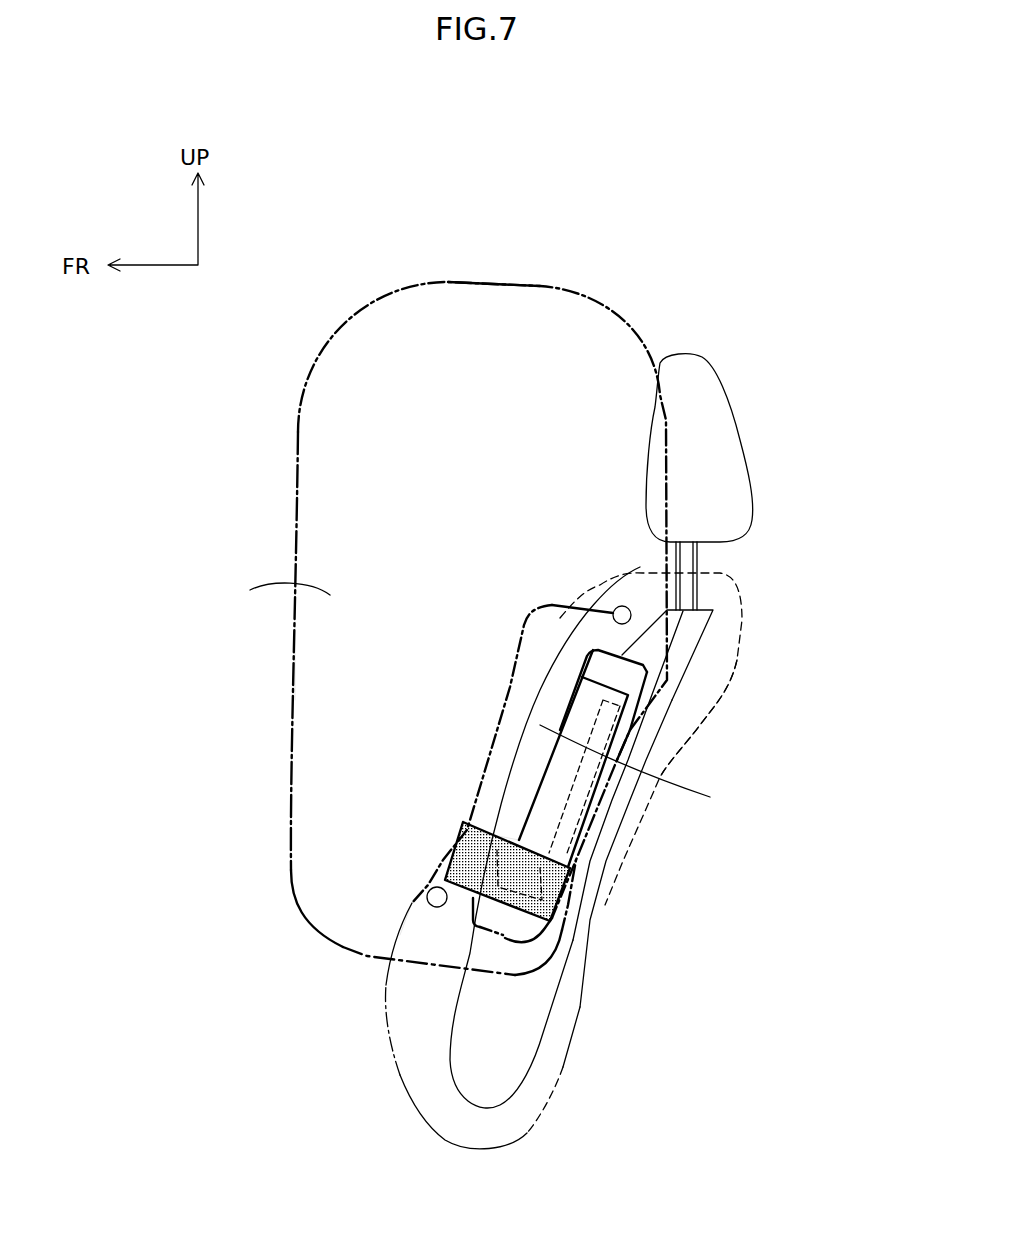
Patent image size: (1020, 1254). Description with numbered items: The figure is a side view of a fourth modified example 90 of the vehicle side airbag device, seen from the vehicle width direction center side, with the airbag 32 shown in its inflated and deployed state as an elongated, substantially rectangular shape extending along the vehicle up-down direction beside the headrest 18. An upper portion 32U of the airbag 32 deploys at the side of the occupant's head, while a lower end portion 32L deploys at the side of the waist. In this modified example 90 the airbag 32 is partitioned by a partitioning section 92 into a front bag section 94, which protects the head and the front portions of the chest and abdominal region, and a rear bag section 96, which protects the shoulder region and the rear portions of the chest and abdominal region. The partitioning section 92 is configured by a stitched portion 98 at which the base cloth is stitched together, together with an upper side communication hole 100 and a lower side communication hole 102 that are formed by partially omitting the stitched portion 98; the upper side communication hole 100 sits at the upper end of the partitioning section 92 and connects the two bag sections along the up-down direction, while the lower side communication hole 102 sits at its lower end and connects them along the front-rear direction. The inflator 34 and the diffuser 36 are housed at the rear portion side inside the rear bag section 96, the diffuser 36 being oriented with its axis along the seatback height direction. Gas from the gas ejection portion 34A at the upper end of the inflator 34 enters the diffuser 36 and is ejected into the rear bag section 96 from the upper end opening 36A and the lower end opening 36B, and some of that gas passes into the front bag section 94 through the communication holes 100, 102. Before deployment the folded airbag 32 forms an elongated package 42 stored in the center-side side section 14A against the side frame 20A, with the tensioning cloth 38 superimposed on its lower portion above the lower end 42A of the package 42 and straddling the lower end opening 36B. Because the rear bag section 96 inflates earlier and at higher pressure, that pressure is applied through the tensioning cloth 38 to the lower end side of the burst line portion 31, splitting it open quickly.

The center-side side support section 14A is at (612, 880).
The headrest 18 is at (683, 353).
The side frame 20A is at (550, 1032).
The burst line portion 31 is at (493, 757).
The airbag 32 is at (292, 507).
The upper portion of the airbag 32U is at (483, 375).
The lower end portion of the airbag 32L is at (337, 920).
The inflator 34 is at (603, 807).
The gas ejection portion 34A is at (690, 732).
The diffuser 36 is at (545, 763).
The upper end opening 36A is at (615, 680).
The lower end opening 36B is at (555, 950).
The tensioning cloth 38 is at (457, 893).
The package 42 is at (511, 810).
The lower end of the package 42A is at (557, 995).
The fourth modified example 90 is at (232, 688).
The partitioning section 92 is at (520, 622).
The front bag section 94 is at (250, 590).
The rear bag section 96 is at (710, 797).
The stitched portion 98 is at (507, 687).
The upper side communication hole 100 is at (643, 610).
The lower side communication hole 102 is at (407, 930).